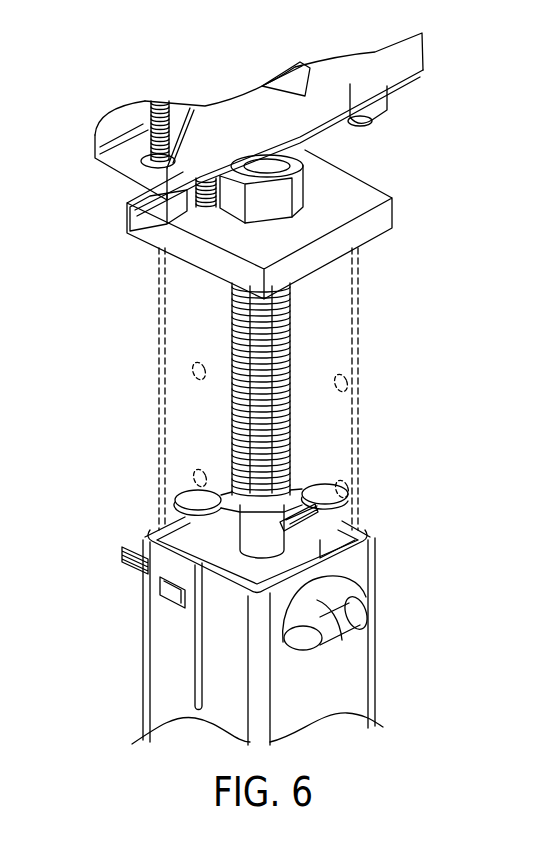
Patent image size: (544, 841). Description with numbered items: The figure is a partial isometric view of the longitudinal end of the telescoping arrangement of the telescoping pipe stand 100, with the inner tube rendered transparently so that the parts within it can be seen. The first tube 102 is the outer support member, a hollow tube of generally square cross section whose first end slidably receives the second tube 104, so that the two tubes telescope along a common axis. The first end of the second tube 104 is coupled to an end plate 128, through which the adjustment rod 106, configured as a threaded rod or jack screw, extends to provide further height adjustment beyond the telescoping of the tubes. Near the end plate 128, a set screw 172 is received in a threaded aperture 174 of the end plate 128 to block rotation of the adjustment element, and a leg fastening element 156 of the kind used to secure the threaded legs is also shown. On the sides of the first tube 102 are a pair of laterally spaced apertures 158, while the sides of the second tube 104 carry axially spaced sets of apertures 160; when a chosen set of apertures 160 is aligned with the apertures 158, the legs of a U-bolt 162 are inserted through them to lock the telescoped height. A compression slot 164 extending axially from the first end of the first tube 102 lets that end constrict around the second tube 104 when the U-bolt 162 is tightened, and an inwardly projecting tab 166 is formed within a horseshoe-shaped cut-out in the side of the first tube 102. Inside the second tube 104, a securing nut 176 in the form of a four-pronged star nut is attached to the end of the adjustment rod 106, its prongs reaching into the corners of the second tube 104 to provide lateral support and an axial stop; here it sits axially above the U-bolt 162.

The telescoping pipe stand 100 is at (432, 66).
The first tube 102 is at (385, 633).
The second tube 104 is at (368, 323).
The adjustment rod 106 is at (237, 333).
The end plate 128 is at (363, 203).
The leg fastening element 156 is at (140, 194).
The apertures 158 is at (297, 183).
The apertures 160 is at (196, 372).
The U-bolt 162 is at (338, 632).
The compression slot 164 is at (198, 647).
The inwardly projecting tab 166 is at (175, 603).
The set screw 172 is at (211, 178).
The threaded aperture 174 is at (153, 243).
The securing nut 176 is at (317, 492).